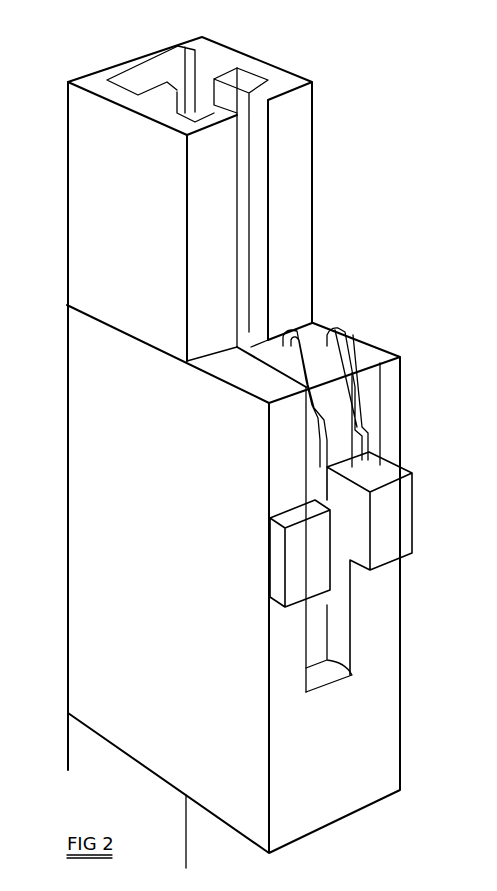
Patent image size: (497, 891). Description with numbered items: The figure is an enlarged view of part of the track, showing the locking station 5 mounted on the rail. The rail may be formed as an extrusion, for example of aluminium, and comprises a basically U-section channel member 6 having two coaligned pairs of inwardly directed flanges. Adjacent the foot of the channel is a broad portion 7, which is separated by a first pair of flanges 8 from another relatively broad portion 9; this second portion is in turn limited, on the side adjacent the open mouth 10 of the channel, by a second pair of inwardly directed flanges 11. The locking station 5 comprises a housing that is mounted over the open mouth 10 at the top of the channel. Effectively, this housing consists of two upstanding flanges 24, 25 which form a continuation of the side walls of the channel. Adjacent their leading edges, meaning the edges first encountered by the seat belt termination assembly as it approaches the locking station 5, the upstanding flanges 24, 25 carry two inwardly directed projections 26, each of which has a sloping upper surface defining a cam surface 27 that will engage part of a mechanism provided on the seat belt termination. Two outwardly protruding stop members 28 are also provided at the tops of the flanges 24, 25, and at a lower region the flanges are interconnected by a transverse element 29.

The locking station 5 is at (70, 640).
The channel member 6 is at (68, 172).
The broad portion 7 is at (163, 77).
The first pair of flanges 8 is at (219, 56).
The relatively broad portion 9 is at (228, 88).
The mouth 10 is at (257, 190).
The second pair of inwardly directed flanges 11 is at (300, 100).
The upstanding flange 24 is at (264, 519).
The upstanding flange 25 is at (403, 447).
The inwardly directed projections 26 is at (313, 412).
The cam surface 27 is at (350, 387).
The stop members 28 is at (400, 517).
The transverse element 29 is at (329, 674).